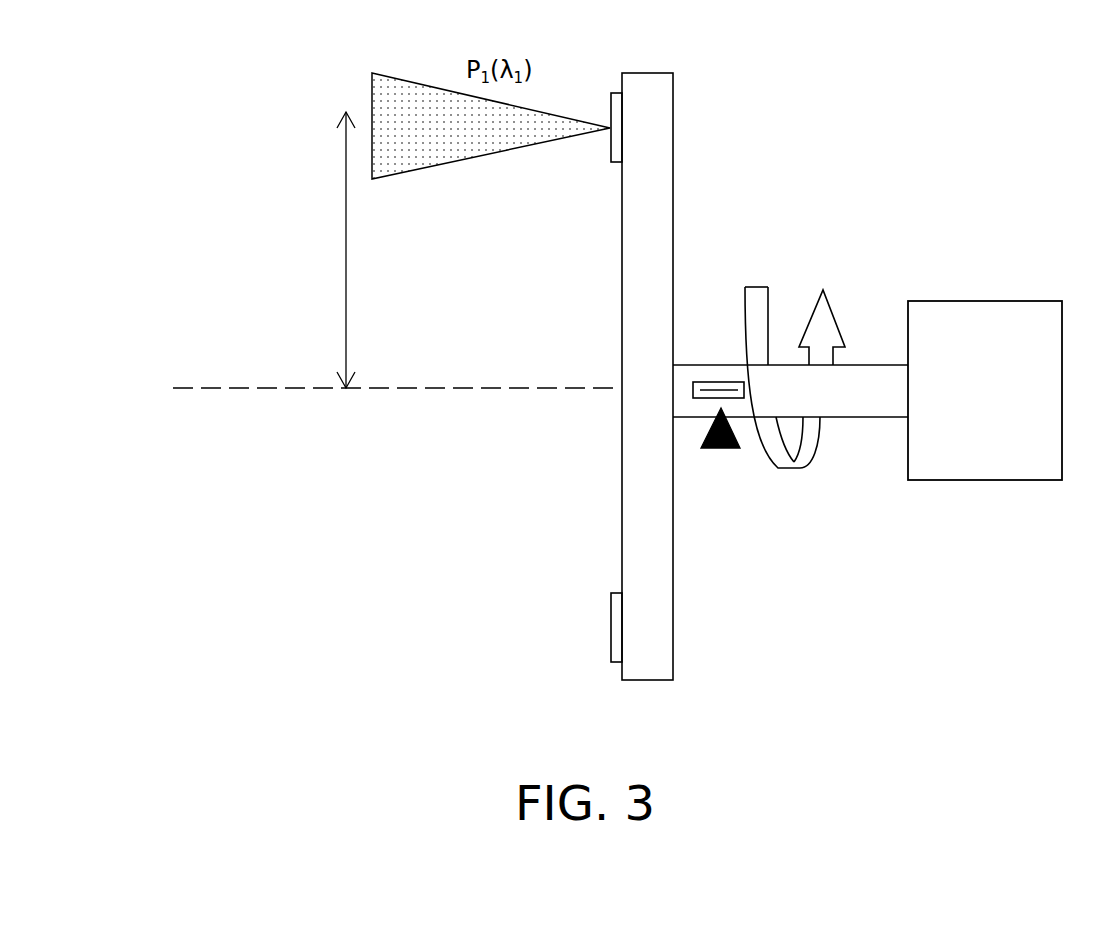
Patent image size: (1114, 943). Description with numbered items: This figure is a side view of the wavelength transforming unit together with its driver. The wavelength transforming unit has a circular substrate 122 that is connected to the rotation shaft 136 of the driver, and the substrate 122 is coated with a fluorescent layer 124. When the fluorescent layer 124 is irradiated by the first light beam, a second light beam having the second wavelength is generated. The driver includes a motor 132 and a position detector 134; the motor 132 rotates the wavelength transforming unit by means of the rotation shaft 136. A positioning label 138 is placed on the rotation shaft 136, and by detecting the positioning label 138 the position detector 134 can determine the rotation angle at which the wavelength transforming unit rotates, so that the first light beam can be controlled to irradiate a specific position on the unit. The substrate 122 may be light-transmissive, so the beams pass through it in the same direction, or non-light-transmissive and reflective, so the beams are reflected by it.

The substrate 122 is at (652, 90).
The fluorescent layer 124 is at (612, 145).
The motor 132 is at (1005, 301).
The position detector 134 is at (720, 450).
The rotation shaft 136 is at (873, 380).
The positioning label 138 is at (708, 380).